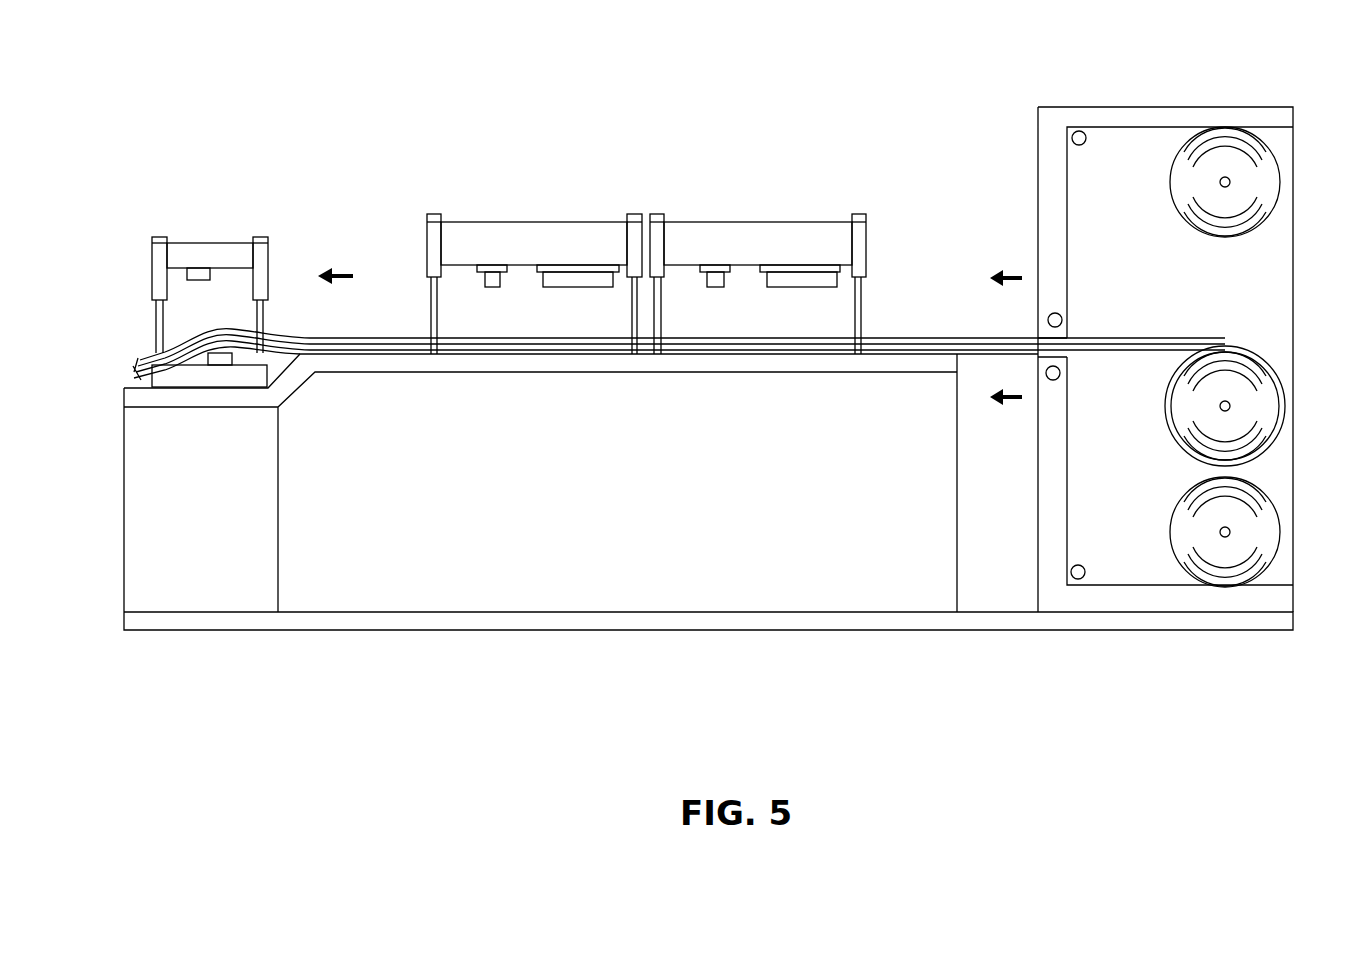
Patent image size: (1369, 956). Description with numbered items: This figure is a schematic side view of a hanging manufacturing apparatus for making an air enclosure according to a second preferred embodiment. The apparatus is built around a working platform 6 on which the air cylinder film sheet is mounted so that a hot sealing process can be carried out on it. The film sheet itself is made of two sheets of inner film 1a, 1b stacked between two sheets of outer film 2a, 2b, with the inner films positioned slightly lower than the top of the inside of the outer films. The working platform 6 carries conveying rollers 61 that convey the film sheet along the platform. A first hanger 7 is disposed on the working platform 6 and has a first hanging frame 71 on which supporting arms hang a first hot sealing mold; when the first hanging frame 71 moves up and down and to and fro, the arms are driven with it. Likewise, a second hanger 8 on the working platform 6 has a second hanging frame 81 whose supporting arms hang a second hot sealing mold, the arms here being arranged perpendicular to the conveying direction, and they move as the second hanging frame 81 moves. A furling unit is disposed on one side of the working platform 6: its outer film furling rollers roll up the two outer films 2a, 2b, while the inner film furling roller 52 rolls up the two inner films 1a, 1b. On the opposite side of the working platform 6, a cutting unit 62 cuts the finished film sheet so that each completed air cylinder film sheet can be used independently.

The inner film 1a is at (1130, 346).
The inner film 1b is at (1163, 352).
The outer film 2a is at (1175, 127).
The outer film 2b is at (1113, 585).
The inner film furling roller 52 is at (1265, 388).
The working platform 6 is at (575, 372).
The conveying roller 61 is at (1060, 378).
The cutting unit 62 is at (208, 243).
The first hanger 7 is at (763, 251).
The first hanging frame 71 is at (825, 228).
The second hanger 8 is at (540, 251).
The second hanging frame 81 is at (600, 228).